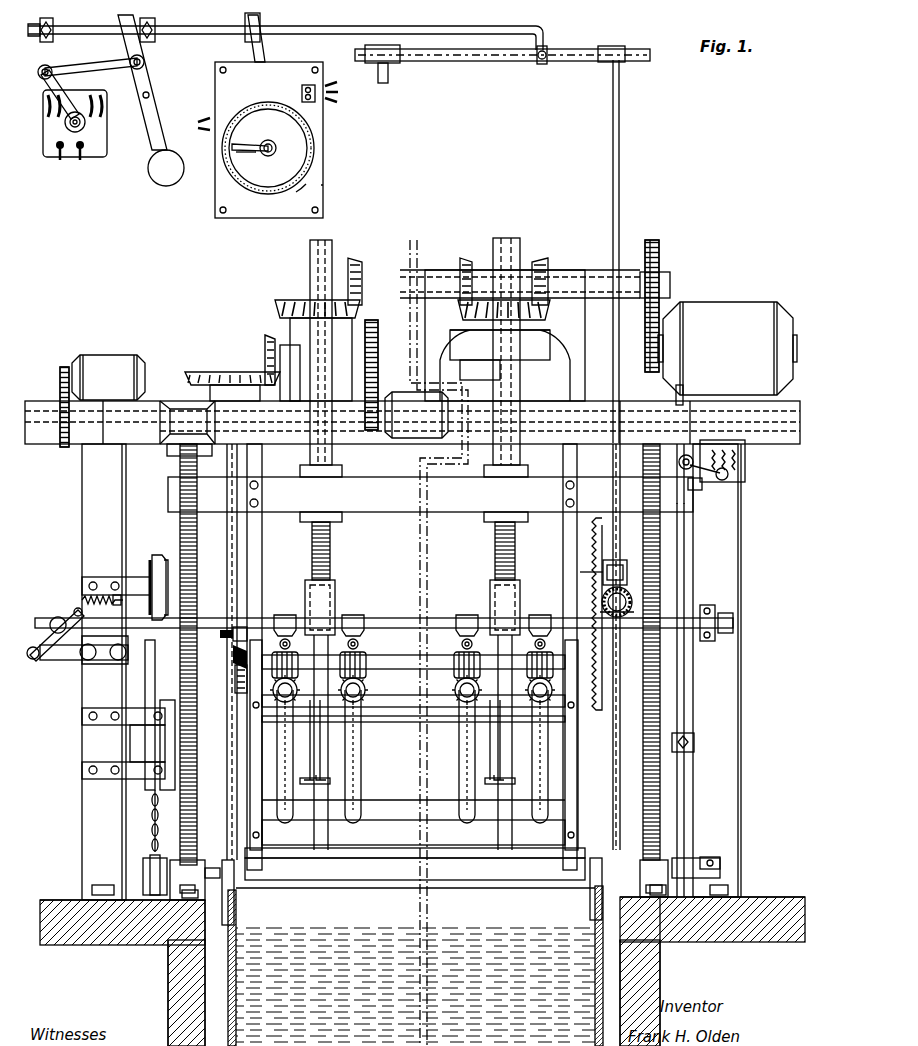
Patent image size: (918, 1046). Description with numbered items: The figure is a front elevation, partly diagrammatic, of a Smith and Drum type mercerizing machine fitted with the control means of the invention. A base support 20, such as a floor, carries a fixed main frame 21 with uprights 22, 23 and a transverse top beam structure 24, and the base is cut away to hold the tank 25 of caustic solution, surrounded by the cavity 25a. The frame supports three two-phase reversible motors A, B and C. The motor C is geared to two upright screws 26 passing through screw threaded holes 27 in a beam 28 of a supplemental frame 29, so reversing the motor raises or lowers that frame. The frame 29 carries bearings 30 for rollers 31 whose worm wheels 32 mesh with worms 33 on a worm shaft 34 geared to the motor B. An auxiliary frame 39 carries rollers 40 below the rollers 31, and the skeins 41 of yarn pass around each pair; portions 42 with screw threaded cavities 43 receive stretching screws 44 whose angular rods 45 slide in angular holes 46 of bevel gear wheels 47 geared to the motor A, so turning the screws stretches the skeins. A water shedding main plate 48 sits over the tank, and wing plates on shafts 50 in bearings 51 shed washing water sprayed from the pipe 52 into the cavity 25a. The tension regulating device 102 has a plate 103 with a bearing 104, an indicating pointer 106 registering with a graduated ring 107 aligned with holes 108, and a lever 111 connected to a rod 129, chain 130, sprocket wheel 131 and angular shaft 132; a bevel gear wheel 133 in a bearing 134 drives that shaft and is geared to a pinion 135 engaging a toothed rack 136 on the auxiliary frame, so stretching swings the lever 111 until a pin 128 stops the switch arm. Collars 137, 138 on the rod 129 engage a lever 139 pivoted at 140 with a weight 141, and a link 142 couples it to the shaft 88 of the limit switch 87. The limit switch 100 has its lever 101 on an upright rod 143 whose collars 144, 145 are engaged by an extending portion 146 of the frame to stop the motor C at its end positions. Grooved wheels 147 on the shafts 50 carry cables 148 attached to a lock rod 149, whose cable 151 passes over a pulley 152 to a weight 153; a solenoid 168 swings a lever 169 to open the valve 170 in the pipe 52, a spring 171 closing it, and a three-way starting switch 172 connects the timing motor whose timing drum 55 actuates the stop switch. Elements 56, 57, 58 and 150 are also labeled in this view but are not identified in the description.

The base support 20 is at (50, 900).
The main frame 21 is at (740, 762).
The upright 22 is at (88, 804).
The upright 23 is at (736, 694).
The transverse top beam structure 24 is at (766, 448).
The tank 25 is at (245, 918).
The cavity 25a is at (668, 976).
The upright screws 26 is at (178, 472).
The screw threaded holes 27 is at (176, 498).
The beam 28 is at (420, 456).
The supplemental frame 29 is at (412, 521).
The bearings 30 is at (626, 686).
The rollers 31 is at (298, 698).
The worm wheels 32 is at (365, 672).
The worms 33 is at (624, 638).
The worm shaft 34 is at (370, 656).
The auxiliary frame 39 is at (440, 804).
The rollers 40 is at (294, 813).
The skeins of yarn 41 is at (312, 756).
The portions 42 is at (335, 588).
The screw threaded cavities 43 is at (338, 606).
The tensioning or stretching screws 44 is at (332, 570).
The angular rods 45 is at (310, 256).
The angular holes 46 is at (286, 300).
The bevel gear wheels 47 is at (273, 306).
The water shedding main plate 48 is at (487, 847).
The shafts 50 is at (208, 860).
The bearings 51 is at (242, 900).
The pipe 52 is at (402, 620).
The timing drum 55 is at (232, 680).
The pawl 56 is at (230, 655).
The guide rod 57 is at (224, 546).
The block 58 is at (220, 637).
The limit switch 87 is at (98, 139).
The shaft 88 is at (86, 122).
The limit switch 100 is at (730, 471).
The lever 101 is at (732, 484).
The tension regulating device 102 is at (318, 115).
The plate 103 is at (325, 187).
The bearing 104 is at (276, 149).
The indicating pointer 106 is at (254, 154).
The ring 107 is at (258, 117).
The holes 108 is at (258, 190).
The lever 111 is at (260, 51).
The pin 128 is at (296, 192).
The rod 129 is at (428, 28).
The chain 130 is at (528, 62).
The sprocket wheel 131 is at (633, 62).
The angular shaft 132 is at (622, 141).
The bevel gear wheel 133 is at (602, 598).
The bearing 134 is at (579, 576).
The pinion 135 is at (620, 616).
The toothed rack 136 is at (600, 696).
The collar 137 is at (156, 23).
The collar 138 is at (48, 23).
The lever 139 is at (163, 118).
The pivot 140 is at (155, 96).
The weight 141 is at (170, 186).
The link 142 is at (90, 64).
The upright rod 143 is at (686, 570).
The collar 144 is at (691, 498).
The collar 145 is at (694, 744).
The extending portion 146 is at (690, 510).
The grooved wheels 147 is at (142, 864).
The cables 148 is at (148, 838).
The lock rod 149 is at (154, 670).
The block 150 is at (132, 742).
The cable 151 is at (156, 558).
The pulley 152 is at (150, 556).
The weight 153 is at (132, 709).
The solenoid 168 is at (90, 660).
The lever 169 is at (80, 592).
The valve 170 is at (60, 608).
The spring 171 is at (110, 576).
The three-way starting switch 172 is at (302, 92).
The motor A is at (727, 353).
The motor B is at (416, 415).
The motor C is at (108, 377).